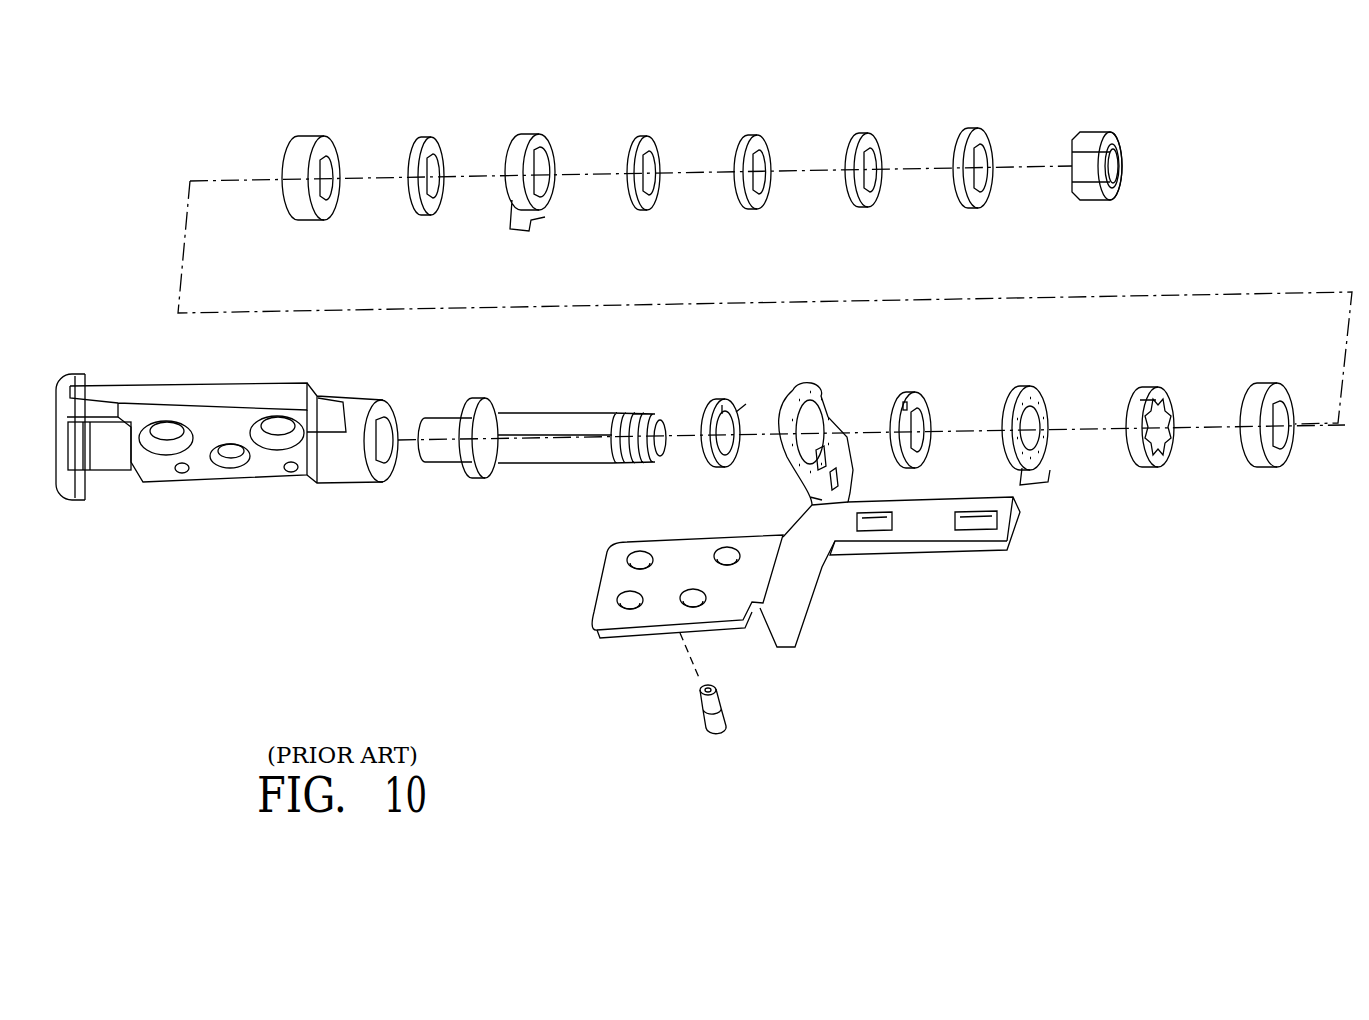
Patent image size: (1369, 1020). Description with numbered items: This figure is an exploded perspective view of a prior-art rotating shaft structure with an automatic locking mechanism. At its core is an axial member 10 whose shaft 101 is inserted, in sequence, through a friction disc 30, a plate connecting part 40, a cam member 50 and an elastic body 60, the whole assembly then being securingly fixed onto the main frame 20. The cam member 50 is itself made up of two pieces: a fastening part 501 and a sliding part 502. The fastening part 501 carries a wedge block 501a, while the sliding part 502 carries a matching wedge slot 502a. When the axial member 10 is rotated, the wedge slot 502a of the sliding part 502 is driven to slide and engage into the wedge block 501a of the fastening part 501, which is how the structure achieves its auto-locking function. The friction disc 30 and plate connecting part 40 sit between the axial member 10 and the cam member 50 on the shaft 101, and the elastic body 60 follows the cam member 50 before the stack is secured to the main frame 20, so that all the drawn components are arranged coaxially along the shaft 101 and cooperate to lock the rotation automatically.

The axial member 10 is at (542, 476).
The shaft 101 is at (593, 452).
The main frame 20 is at (817, 598).
The friction disc 30 is at (913, 390).
The plate connecting part 40 is at (1020, 388).
The cam member 50 is at (1229, 437).
The fastening part 501 is at (1176, 468).
The wedge block 501a is at (1158, 402).
The sliding part 502 is at (1289, 443).
The wedge slot 502a is at (1294, 394).
The elastic body 60 is at (427, 145).